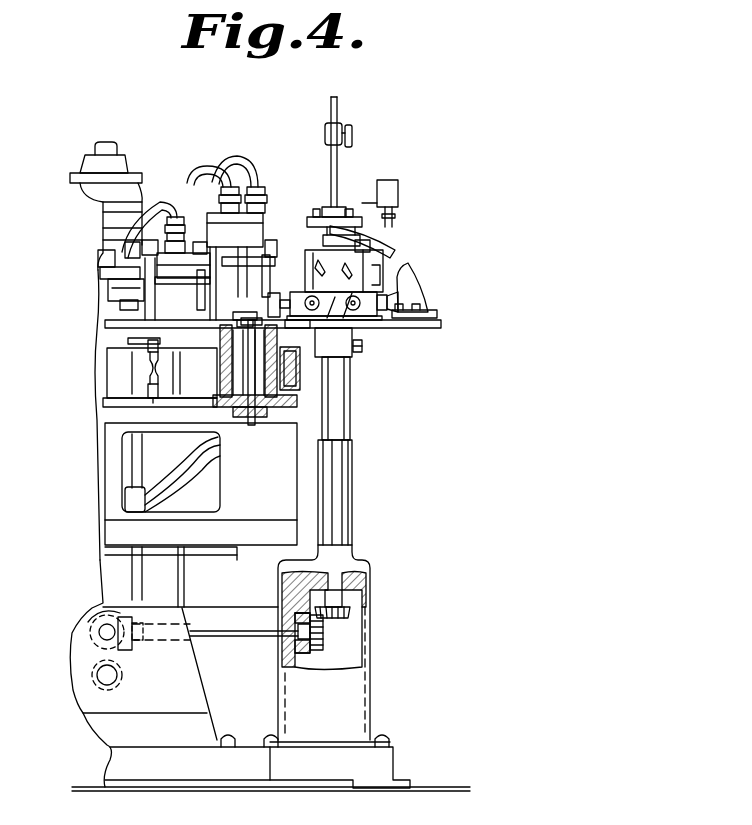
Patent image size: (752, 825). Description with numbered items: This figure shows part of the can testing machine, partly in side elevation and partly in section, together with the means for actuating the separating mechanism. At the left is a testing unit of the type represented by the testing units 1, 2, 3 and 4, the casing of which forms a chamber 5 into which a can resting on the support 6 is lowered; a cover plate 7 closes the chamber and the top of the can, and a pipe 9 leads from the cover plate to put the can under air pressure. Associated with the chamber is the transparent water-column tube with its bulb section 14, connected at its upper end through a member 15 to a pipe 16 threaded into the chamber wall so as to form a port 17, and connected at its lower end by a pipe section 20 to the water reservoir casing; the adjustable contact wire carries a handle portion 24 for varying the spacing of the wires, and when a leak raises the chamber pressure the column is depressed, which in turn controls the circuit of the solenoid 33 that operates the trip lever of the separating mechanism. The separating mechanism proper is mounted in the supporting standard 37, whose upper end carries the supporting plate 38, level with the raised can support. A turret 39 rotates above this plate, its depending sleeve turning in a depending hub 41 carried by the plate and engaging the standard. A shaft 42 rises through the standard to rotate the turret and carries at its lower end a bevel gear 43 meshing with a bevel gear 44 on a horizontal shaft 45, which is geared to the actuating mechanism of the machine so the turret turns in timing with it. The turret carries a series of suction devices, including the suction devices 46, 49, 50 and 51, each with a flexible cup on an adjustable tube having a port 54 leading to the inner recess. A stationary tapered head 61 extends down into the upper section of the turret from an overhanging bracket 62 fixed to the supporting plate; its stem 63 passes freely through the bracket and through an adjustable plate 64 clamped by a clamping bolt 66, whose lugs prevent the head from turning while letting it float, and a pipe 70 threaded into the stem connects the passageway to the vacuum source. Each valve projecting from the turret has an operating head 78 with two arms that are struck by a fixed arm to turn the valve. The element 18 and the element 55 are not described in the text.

The testing unit 1 is at (105, 288).
The testing unit 2 is at (100, 258).
The testing unit 3 is at (204, 222).
The testing unit 4 is at (262, 232).
The chamber 5 is at (300, 383).
The support 6 is at (247, 313).
The cover plate 7 is at (105, 323).
The pipe 9 is at (103, 227).
The bulb section 14 is at (176, 399).
The member 15 is at (160, 341).
The pipe 16 is at (148, 345).
The port 17 is at (162, 373).
The spring 18 is at (150, 365).
The pipe section 20 is at (148, 390).
The handle portion 24 is at (103, 405).
The solenoid 33 is at (270, 262).
The supporting standard 37 is at (352, 498).
The supporting plate 38 is at (441, 325).
The turret 39 is at (297, 355).
The depending hub 41 is at (349, 358).
The shaft 42 is at (368, 576).
The bevel gear 43 is at (350, 614).
The bevel gear 44 is at (323, 640).
The shaft 45 is at (255, 640).
The suction device 46 is at (272, 292).
The suction device 49 is at (398, 300).
The suction device 50 is at (358, 322).
The suction device 51 is at (320, 295).
The port 54 is at (352, 325).
The stop 55 is at (362, 243).
The tapered head 61 is at (323, 241).
The overhanging bracket 62 is at (415, 280).
The stem 63 is at (309, 222).
The adjustable plate 64 is at (392, 193).
The clamping bolt 66 is at (357, 220).
The pipe 70 is at (330, 150).
The operating head 78 is at (372, 282).